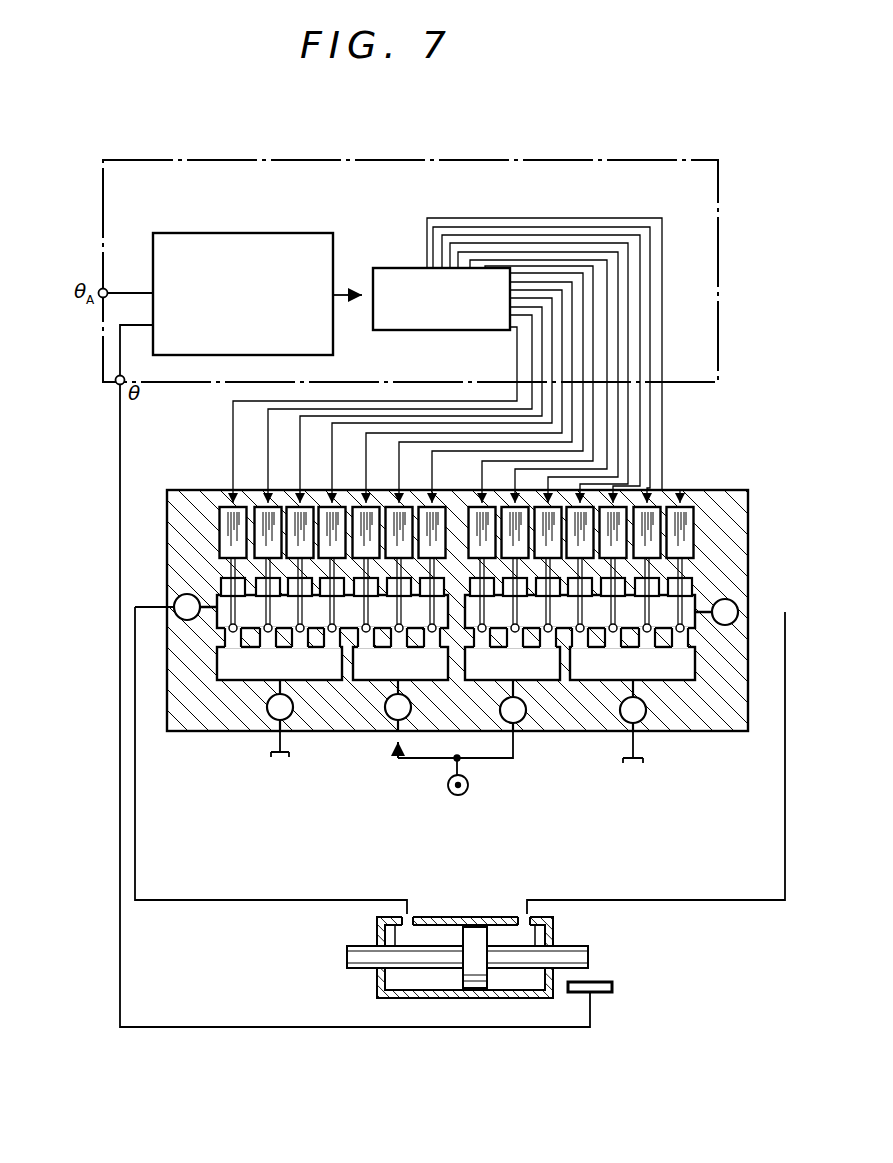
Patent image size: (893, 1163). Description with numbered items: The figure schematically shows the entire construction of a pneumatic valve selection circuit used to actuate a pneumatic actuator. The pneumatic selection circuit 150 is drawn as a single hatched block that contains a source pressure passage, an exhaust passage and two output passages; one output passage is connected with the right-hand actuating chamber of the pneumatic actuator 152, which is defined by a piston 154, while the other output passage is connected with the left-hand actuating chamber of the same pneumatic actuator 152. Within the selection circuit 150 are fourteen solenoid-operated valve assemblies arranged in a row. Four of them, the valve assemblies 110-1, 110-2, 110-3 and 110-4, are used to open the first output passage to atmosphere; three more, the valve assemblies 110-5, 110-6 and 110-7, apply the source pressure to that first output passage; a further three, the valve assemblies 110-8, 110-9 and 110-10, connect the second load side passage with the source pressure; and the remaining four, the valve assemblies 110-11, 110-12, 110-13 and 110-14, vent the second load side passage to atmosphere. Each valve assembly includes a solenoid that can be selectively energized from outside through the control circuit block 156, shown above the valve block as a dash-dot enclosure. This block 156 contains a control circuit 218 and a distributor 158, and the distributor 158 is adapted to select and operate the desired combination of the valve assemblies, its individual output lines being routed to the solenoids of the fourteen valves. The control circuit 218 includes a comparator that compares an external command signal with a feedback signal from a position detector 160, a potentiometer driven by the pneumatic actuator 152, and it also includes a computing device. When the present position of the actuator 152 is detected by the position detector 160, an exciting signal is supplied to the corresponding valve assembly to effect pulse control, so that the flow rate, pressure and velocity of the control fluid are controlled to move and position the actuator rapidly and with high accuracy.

The control circuit block 156 is at (441, 160).
The control circuit 218 is at (232, 233).
The distributor 158 is at (393, 268).
The pneumatic selection circuit 150 is at (715, 502).
The pneumatic actuator 152 is at (448, 914).
The piston 154 is at (476, 978).
The position detector (potentiometer) 160 is at (614, 983).
The valve assembly 110-1 is at (670, 612).
The valve assembly 110-2 is at (637, 612).
The valve assembly 110-3 is at (603, 612).
The valve assembly 110-4 is at (570, 612).
The valve assembly 110-5 is at (538, 612).
The valve assembly 110-6 is at (505, 612).
The valve assembly 110-7 is at (472, 612).
The valve assembly 110-8 is at (422, 612).
The valve assembly 110-9 is at (389, 612).
The valve assembly 110-10 is at (356, 612).
The valve assembly 110-11 is at (322, 612).
The valve assembly 110-12 is at (290, 612).
The valve assembly 110-13 is at (258, 612).
The valve assembly 110-14 is at (223, 612).